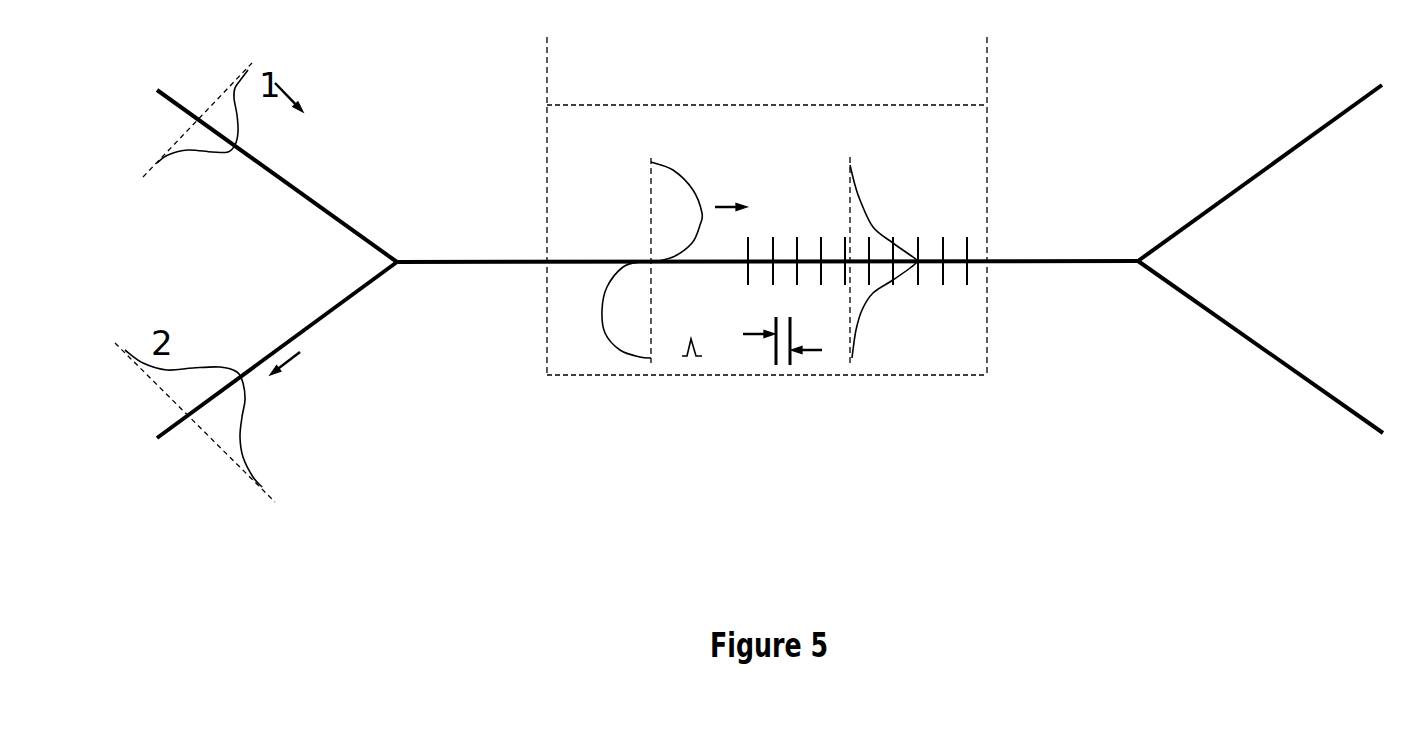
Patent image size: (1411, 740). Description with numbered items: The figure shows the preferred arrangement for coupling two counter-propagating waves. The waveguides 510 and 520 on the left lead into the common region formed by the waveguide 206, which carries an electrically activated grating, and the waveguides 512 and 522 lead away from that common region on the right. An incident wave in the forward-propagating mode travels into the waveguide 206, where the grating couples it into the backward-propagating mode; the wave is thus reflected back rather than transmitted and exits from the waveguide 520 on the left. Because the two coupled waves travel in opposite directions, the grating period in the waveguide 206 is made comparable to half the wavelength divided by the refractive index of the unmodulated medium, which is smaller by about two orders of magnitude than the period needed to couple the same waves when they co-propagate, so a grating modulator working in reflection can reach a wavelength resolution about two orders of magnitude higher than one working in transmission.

The first input fiber arm 510 is at (293, 176).
The waveguide 520 is at (294, 350).
The first output fiber arm 512 is at (1260, 173).
The second output fiber arm 522 is at (1243, 347).
The waveguide 206 is at (767, 240).